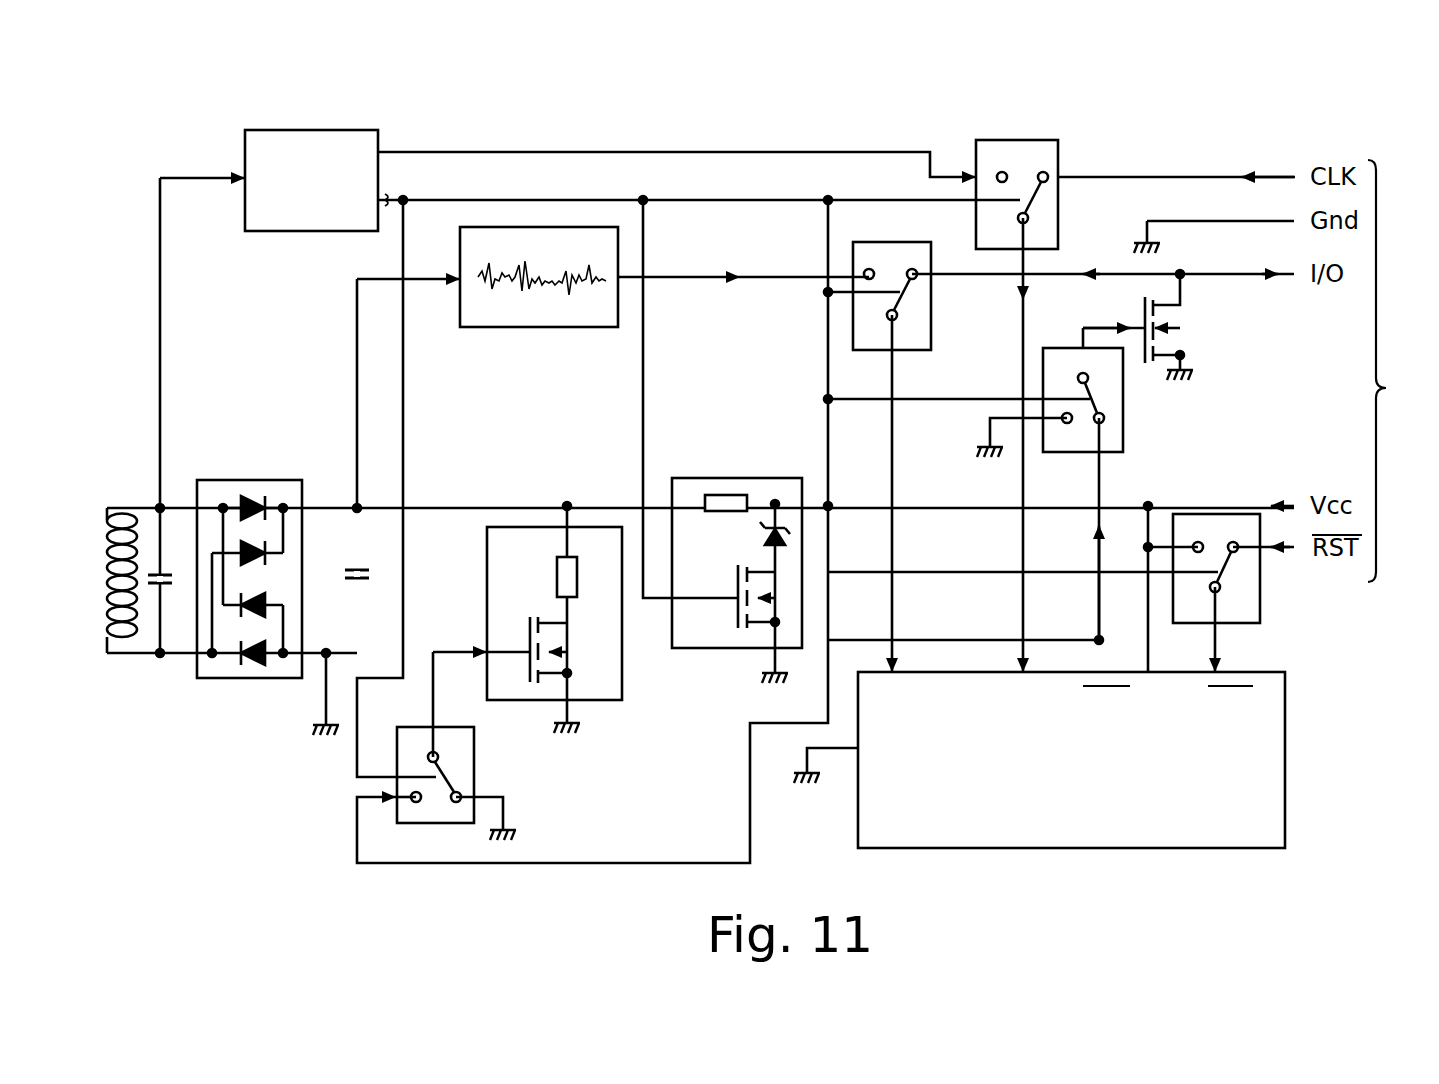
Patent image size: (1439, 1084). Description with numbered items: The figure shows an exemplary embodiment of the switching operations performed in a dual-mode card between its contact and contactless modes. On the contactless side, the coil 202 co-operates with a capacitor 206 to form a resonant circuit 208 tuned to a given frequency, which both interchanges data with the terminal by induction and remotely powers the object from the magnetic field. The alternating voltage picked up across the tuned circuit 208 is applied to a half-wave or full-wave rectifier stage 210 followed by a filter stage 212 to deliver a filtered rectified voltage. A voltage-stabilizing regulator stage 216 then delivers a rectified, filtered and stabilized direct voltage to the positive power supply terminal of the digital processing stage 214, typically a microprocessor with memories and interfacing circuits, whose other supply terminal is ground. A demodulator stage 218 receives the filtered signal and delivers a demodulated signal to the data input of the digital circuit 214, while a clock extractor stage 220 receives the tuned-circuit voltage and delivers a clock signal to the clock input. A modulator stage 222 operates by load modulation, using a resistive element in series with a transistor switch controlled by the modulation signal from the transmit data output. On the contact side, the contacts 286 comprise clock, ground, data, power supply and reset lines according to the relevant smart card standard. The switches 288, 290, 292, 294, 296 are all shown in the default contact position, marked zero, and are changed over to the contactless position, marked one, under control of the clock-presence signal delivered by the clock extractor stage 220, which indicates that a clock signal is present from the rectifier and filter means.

The coil 202 is at (114, 506).
The capacitor 206 is at (172, 572).
The resonant circuit 208 is at (175, 674).
The rectifier stage 210 is at (228, 678).
The filter stage 212 is at (362, 566).
The digital processing stage 214 is at (1285, 757).
The voltage-stabilizing regulator stage 216 is at (746, 478).
The demodulator stage 218 is at (532, 328).
The clock extractor stage 220 is at (276, 232).
The modulator stage 222 is at (622, 690).
The contacts 286 is at (1436, 400).
The switch 288 is at (1028, 140).
The switch 290 is at (931, 332).
The switch 292 is at (1123, 422).
The switch 294 is at (1260, 598).
The switch 296 is at (474, 765).